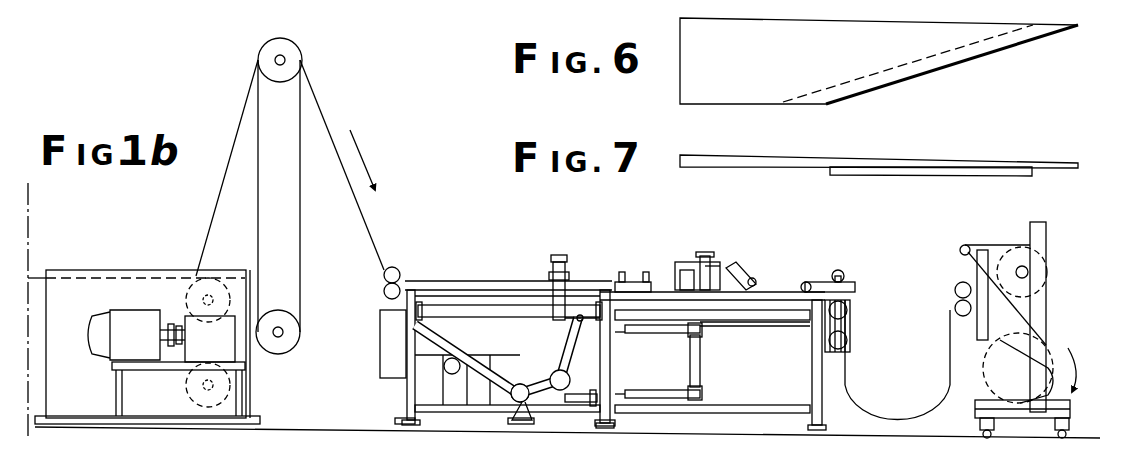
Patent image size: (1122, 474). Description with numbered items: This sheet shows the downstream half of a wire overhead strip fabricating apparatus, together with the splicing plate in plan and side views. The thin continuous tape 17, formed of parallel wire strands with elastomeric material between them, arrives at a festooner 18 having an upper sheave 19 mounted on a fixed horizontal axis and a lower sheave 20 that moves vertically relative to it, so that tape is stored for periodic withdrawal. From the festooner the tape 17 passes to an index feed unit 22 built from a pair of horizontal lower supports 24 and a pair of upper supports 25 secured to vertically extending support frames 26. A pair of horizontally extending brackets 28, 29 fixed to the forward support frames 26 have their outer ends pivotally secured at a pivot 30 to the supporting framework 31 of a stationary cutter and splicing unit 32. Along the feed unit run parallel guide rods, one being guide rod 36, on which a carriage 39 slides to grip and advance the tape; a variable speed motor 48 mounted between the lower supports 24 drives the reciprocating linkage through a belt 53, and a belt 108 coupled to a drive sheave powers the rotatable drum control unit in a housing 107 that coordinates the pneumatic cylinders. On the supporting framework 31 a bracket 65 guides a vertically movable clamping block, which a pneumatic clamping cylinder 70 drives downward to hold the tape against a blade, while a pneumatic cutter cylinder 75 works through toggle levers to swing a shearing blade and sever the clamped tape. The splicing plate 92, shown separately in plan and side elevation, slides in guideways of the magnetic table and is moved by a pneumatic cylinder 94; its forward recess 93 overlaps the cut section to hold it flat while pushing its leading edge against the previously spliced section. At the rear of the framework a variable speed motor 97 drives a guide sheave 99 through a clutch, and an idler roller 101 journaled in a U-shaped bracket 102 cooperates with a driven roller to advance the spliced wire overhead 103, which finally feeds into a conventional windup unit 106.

In FIG. 1b, the tape 17 is at (220, 212).
In FIG. 1b, the festooner 18 is at (338, 94).
In FIG. 1b, the upper sheave 19 is at (290, 63).
In FIG. 1b, the lower sheave 20 is at (286, 333).
In FIG. 1b, the index feed unit 22 is at (520, 255).
In FIG. 1b, the lower supports 24 is at (455, 418).
In FIG. 1b, the upper supports 25 is at (485, 300).
In FIG. 1b, the support frames 26 is at (405, 395).
In FIG. 1b, the bracket 28 is at (628, 336).
In FIG. 1b, the bracket 29 is at (627, 392).
In FIG. 1b, the pivot 30 is at (695, 336).
In FIG. 1b, the supporting framework 31 is at (758, 327).
In FIG. 1b, the cutter and splicing unit 32 is at (806, 258).
In FIG. 1b, the guide rod 36 is at (500, 318).
In FIG. 1b, the carriage 39 is at (557, 322).
In FIG. 1b, the variable speed motor 48 is at (560, 395).
In FIG. 1b, the belt 53 is at (488, 400).
In FIG. 1b, the bracket 65 is at (705, 256).
In FIG. 1b, the pneumatic clamping cylinder 70 is at (678, 262).
In FIG. 1b, the pneumatic cutter cylinder 75 is at (736, 272).
In FIG. 6, the splicing plate 92 is at (698, 35).
In FIG. 7, the splicing plate 92 is at (728, 170).
In FIG. 6, the recess 93 is at (958, 50).
In FIG. 7, the recess 93 is at (848, 175).
In FIG. 1b, the pneumatic cylinder 94 is at (646, 282).
In FIG. 1b, the variable speed motor 97 is at (846, 368).
In FIG. 1b, the guide sheave 99 is at (848, 338).
In FIG. 1b, the idler roller 101 is at (848, 278).
In FIG. 1b, the U-shaped bracket 102 is at (850, 290).
In FIG. 1b, the wire overhead 103 is at (858, 414).
In FIG. 1b, the windup unit 106 is at (990, 228).
In FIG. 1b, the housing 107 is at (386, 326).
In FIG. 1b, the belt 108 is at (436, 361).